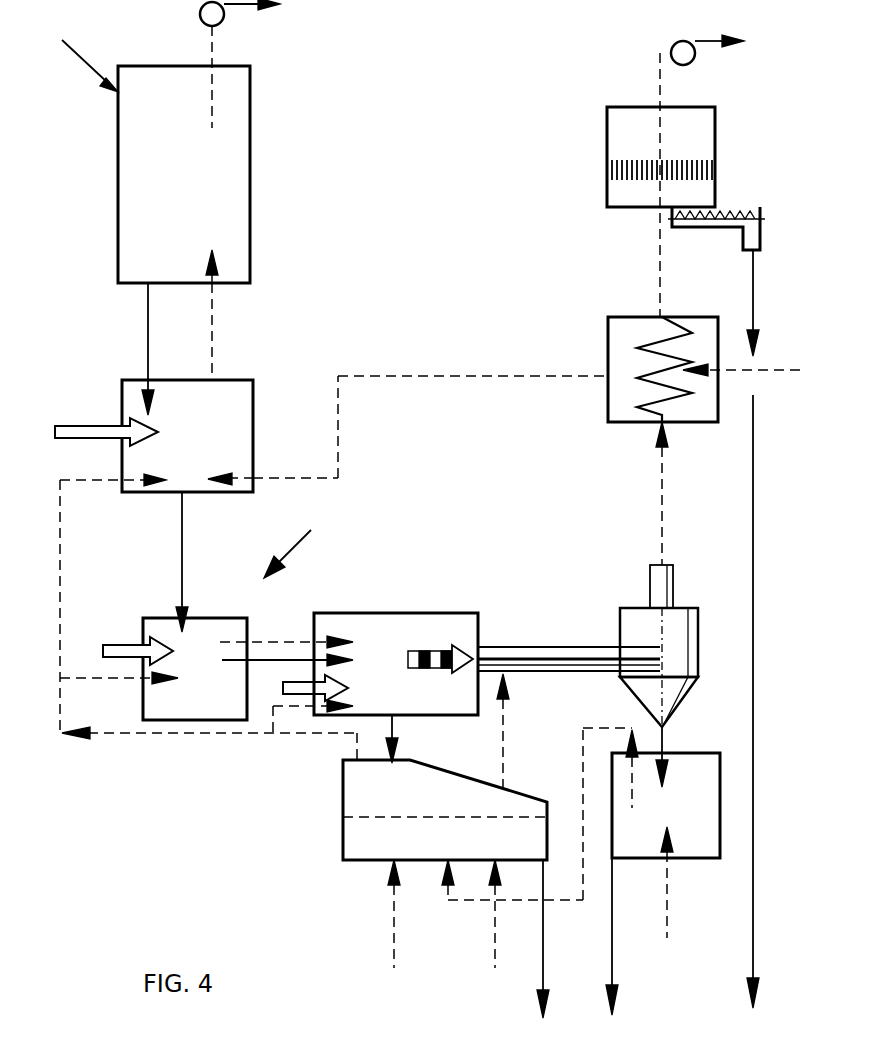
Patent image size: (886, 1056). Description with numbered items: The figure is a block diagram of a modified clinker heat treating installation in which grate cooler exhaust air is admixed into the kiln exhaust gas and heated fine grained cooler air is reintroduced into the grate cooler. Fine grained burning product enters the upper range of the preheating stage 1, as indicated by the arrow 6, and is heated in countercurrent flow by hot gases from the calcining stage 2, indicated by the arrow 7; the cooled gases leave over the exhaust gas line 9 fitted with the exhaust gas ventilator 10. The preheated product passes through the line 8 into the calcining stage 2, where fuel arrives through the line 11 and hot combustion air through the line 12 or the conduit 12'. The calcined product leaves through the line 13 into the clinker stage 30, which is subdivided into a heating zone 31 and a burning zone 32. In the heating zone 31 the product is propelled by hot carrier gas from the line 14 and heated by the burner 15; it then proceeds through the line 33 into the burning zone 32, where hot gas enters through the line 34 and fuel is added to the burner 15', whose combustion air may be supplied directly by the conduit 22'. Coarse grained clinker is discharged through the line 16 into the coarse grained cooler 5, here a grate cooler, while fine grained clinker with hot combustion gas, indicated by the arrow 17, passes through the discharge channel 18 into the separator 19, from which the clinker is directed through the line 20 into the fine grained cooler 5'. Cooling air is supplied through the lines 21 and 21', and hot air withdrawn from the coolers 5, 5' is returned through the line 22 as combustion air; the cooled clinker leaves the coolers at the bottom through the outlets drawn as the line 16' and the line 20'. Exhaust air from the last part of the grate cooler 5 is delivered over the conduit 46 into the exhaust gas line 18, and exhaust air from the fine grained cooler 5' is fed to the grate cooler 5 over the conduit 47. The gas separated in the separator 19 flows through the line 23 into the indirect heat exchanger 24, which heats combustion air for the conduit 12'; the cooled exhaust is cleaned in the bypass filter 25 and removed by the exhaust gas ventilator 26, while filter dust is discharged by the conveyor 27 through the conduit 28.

The preheating stage 1 is at (193, 179).
The calcining stage 2 is at (209, 446).
The coarse grained cooler 5 is at (445, 810).
The fine grained cooler 5' is at (666, 805).
The arrow indicating introduction of fine grained burning product 6 is at (76, 53).
The arrow indicating hot gases from calcining stage 7 is at (214, 325).
The line for preheated product 8 is at (148, 327).
The exhaust gas line 9 is at (214, 42).
The exhaust gas ventilator 10 is at (200, 14).
The fuel line 11 is at (85, 432).
The hot combustion air line 12 is at (113, 603).
The conduit for recuperated combustion air 12' is at (504, 414).
The calcined product line 13 is at (183, 530).
The hot carrier gas line 14 is at (82, 678).
The burner 15 is at (136, 629).
The burner of burning zone 15' is at (315, 724).
The discharge line for coarse grained clinker 16 is at (418, 739).
The ash discharge line 16' is at (513, 939).
The arrow indicating discharge of fine grained clinker with hot combustion gas 17 is at (435, 655).
The discharge channel 18 is at (582, 657).
The separator 19 is at (659, 646).
The line to fine grained cooler 20 is at (692, 753).
The ash discharge line 20' is at (642, 936).
The cooling air lines 21 is at (444, 914).
The cooling air line 21' is at (700, 882).
The hot air line 22 is at (209, 762).
The combustion air conduit 22' is at (297, 749).
The exhaust gas line 23 is at (661, 500).
The indirect heat exchanger 24 is at (620, 330).
The bypass filter 25 is at (624, 118).
The exhaust gas ventilator 26 is at (695, 64).
The conveyor 27 is at (693, 231).
The dust conduit 28 is at (753, 495).
The clinker stage 30 is at (294, 550).
The heating zone 31 is at (217, 630).
The burning zone 32 is at (382, 625).
The line to burning zone 33 is at (274, 660).
The hot gas line 34 is at (283, 640).
The conduit for grate cooler exhaust air 46 is at (504, 735).
The conduit for fine grained cooler exhaust air 47 is at (583, 773).